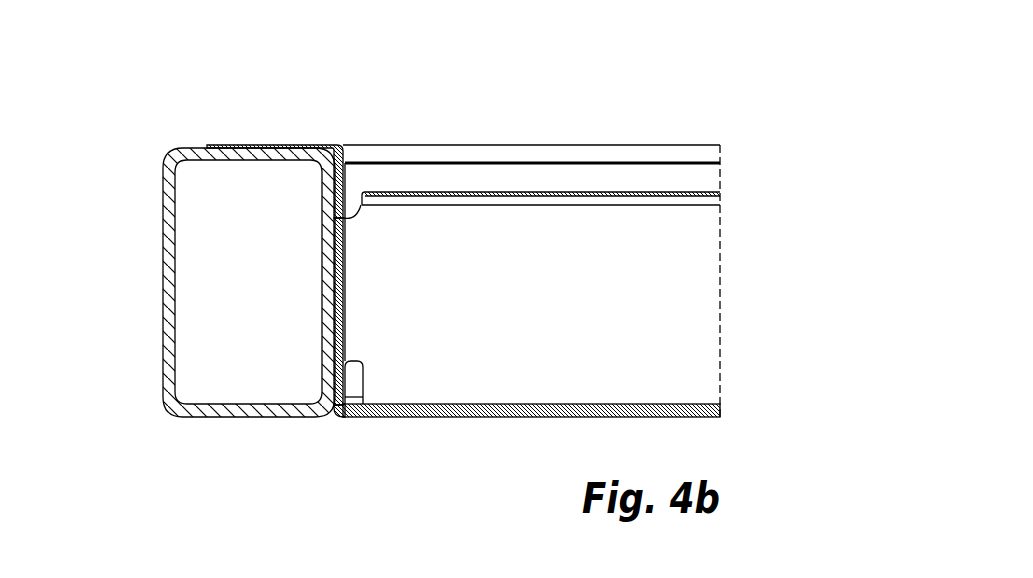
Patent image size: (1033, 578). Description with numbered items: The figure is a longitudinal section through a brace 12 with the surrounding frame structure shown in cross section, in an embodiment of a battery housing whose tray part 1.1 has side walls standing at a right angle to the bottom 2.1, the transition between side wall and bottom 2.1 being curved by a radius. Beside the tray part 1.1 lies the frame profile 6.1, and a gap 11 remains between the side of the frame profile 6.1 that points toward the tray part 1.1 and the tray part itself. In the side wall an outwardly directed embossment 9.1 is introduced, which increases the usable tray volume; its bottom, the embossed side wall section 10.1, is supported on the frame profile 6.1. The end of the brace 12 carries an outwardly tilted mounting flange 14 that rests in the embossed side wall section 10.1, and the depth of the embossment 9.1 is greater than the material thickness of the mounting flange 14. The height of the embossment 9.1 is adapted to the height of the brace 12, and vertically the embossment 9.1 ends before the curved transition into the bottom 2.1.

The tray part 1.1 is at (366, 141).
The frame profile 6.1 is at (157, 226).
The embossment 9.1 is at (344, 187).
The brace 12 is at (523, 191).
The mounting flange 14 is at (349, 272).
The embossed side wall section 10.1 is at (344, 314).
The bottom 2.1 is at (501, 417).
The gap 11 is at (336, 412).